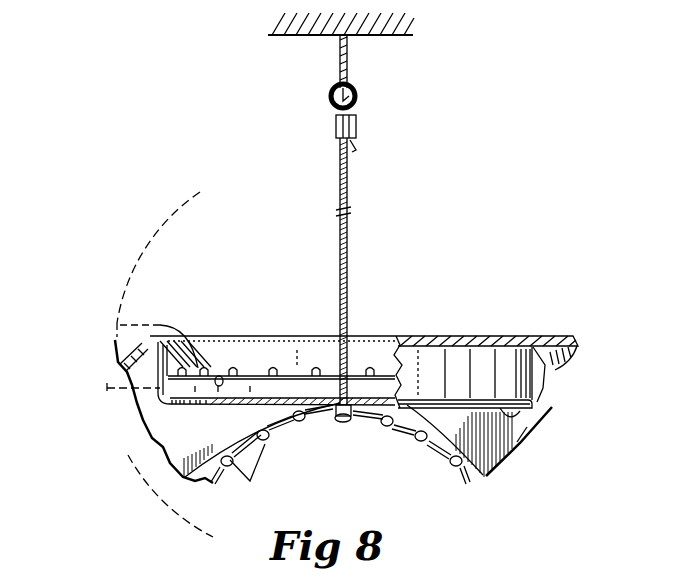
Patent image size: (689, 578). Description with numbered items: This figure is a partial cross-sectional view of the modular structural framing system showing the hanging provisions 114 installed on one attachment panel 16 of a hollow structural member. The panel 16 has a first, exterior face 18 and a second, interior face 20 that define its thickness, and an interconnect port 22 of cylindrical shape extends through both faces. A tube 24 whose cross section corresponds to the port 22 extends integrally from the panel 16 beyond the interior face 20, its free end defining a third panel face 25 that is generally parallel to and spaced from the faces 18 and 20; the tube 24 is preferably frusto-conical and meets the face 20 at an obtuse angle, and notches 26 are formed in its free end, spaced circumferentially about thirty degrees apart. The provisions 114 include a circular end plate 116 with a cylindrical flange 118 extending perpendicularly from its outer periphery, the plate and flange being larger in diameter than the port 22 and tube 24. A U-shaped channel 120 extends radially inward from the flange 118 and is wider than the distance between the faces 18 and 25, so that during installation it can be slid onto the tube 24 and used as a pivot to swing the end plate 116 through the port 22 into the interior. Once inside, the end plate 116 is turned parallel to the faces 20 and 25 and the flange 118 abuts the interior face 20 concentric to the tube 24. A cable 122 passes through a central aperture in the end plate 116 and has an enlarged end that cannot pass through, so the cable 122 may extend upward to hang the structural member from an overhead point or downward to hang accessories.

The attachment panel 16 is at (343, 391).
The first exterior face 18 is at (146, 343).
The second interior face 20 is at (131, 385).
The interconnect port 22 is at (372, 348).
The tube 24 is at (303, 348).
The third panel face 25 is at (220, 376).
The notch 26 is at (230, 368).
The provisions for hanging 114 is at (335, 364).
The circular end plate 116 is at (518, 431).
The cylindrical flange 118 is at (124, 279).
The U-shaped channel 120 is at (117, 328).
The cable 122 is at (349, 222).